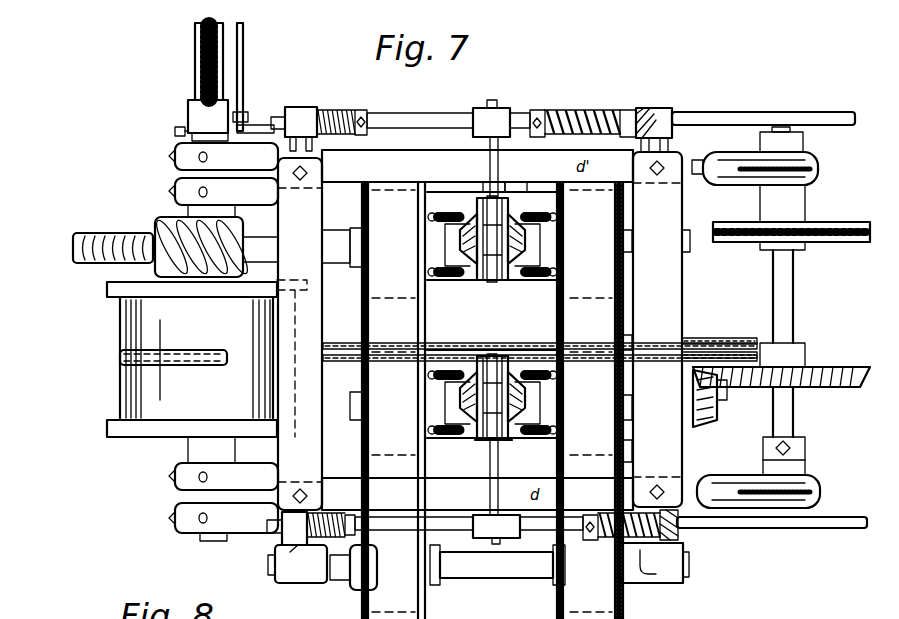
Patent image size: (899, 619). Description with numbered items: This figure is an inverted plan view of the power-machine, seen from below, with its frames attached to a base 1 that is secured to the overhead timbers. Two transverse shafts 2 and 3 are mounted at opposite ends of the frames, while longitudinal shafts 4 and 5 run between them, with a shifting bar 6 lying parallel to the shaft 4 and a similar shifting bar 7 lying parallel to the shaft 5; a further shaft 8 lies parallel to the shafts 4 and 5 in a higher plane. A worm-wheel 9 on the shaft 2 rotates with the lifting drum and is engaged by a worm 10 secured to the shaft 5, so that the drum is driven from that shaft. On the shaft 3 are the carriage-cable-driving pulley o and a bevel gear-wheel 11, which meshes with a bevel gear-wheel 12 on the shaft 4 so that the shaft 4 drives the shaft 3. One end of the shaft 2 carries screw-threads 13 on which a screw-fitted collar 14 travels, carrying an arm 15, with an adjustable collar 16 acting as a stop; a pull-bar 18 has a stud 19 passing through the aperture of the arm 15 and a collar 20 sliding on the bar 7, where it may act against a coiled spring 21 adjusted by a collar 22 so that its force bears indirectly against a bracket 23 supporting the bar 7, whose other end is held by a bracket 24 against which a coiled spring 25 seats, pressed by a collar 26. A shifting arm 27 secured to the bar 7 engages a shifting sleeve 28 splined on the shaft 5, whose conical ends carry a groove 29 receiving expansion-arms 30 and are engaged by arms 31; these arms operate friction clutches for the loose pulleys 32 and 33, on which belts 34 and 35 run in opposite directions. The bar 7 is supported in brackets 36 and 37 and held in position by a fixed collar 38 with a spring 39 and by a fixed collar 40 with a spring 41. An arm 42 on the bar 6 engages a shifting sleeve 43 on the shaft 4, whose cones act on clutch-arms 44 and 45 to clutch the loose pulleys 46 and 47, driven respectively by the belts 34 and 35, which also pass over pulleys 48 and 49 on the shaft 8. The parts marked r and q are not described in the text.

The base 1 is at (120, 318).
The rotative shaft 2 is at (175, 200).
The rotative shaft 3 is at (794, 308).
The rotative shaft 4 is at (350, 420).
The rotative shaft 5 is at (256, 237).
The shifting bar 6 is at (744, 528).
The shifting bar 7 is at (705, 114).
The shaft 8 is at (462, 574).
The worm-wheel 9 is at (92, 233).
The screw or worm 10 is at (170, 223).
The bevel gear-wheel 11 is at (840, 387).
The bevel gear-wheel 12 is at (708, 427).
The screw-threads 13 is at (195, 69).
The screw-fitted collar 14 is at (188, 113).
The arm 15 is at (248, 114).
The collar 16 is at (188, 132).
The pull-bar 18 is at (228, 138).
The stud 19 is at (244, 52).
The collar 20 is at (626, 110).
The coiled spring 21 is at (563, 108).
The collar 22 is at (537, 110).
The bracket 23 is at (652, 108).
The bracket 24 is at (298, 107).
The coiled spring 25 is at (333, 108).
The collar 26 is at (363, 108).
The shifting arm 27 is at (490, 166).
The shifting sleeve 28 is at (489, 282).
The groove 29 is at (512, 190).
The expansion-arms 30 is at (530, 282).
The arms 31 is at (450, 282).
The pulley 32 is at (362, 295).
The pulley 33 is at (556, 301).
The belt 34 is at (362, 326).
The belt 35 is at (560, 330).
The bracket 36 is at (290, 532).
The bracket 37 is at (678, 536).
The fixed collar 38 is at (350, 515).
The spring 39 is at (350, 580).
The fixed collar 40 is at (590, 515).
The spring 41 is at (608, 538).
The arm 42 is at (490, 496).
The shifting sleeve 43 is at (486, 438).
The clutch-arm 44 is at (446, 440).
The clutch-arm 45 is at (536, 440).
The pulley 46 is at (362, 442).
The pulley 47 is at (632, 462).
The pulley 48 is at (426, 604).
The pulley 49 is at (557, 604).
The carriage-cable-driving pulley o is at (832, 242).
The rim r is at (858, 242).
The shaft q is at (120, 362).